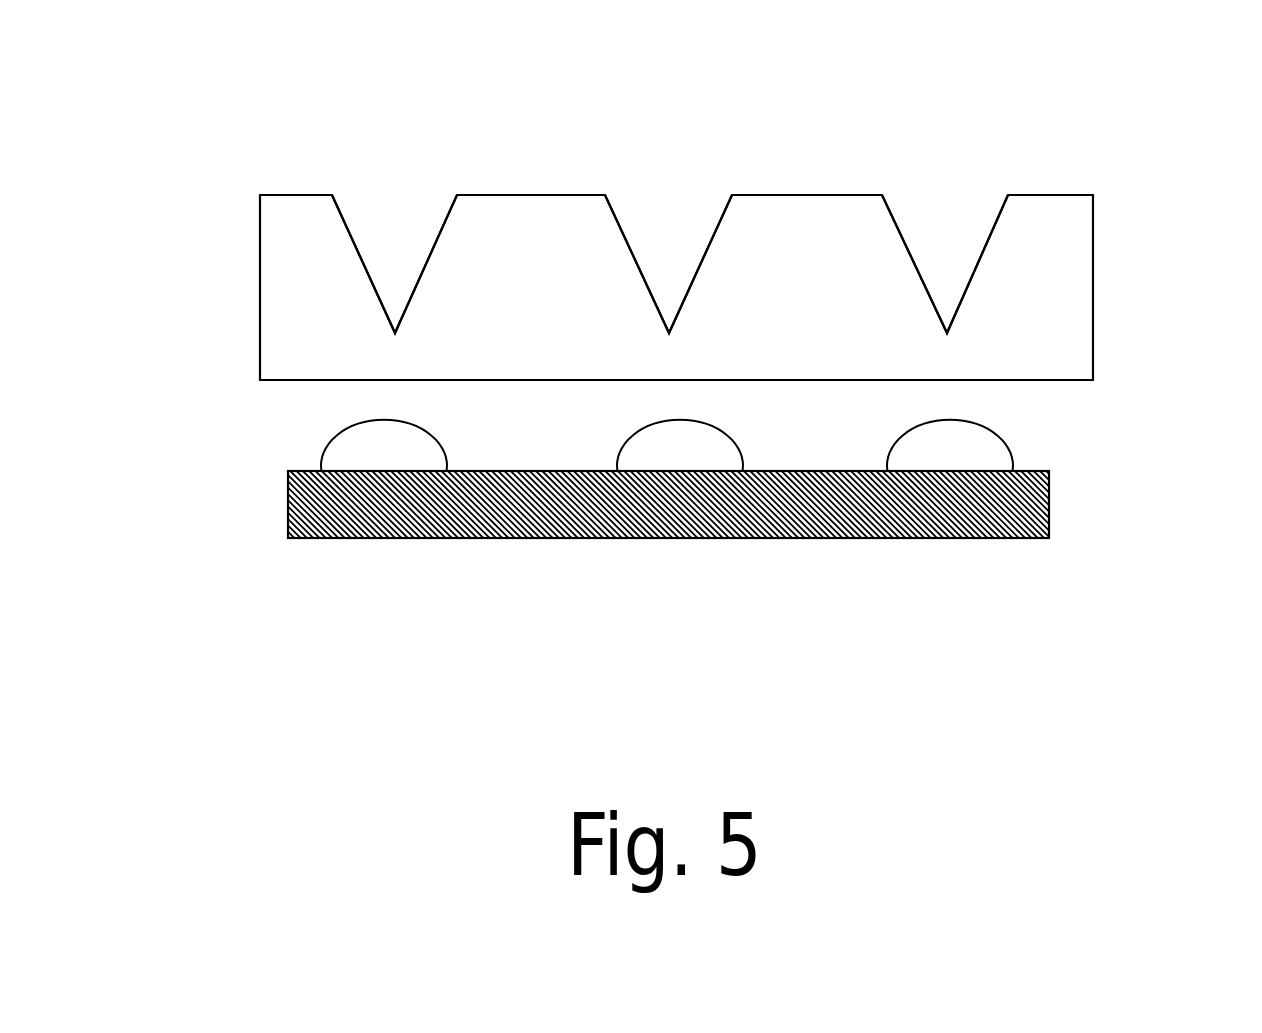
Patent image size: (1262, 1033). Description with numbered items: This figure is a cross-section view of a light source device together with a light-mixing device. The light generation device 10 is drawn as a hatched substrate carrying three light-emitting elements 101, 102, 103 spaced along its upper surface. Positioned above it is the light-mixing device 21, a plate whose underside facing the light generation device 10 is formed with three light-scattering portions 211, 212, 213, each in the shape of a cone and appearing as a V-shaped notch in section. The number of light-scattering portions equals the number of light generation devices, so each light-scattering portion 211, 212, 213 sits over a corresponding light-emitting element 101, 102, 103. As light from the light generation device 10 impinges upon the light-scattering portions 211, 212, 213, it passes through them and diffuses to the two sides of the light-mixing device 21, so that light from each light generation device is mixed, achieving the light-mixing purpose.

The light generation device 10 is at (1050, 478).
The light-emitting element 101 is at (378, 447).
The light-emitting element 102 is at (683, 458).
The light-emitting element 103 is at (957, 455).
The light-mixing device 21 is at (303, 317).
The light-scattering portion 211 is at (433, 247).
The light-scattering portion 212 is at (625, 228).
The light-scattering portion 213 is at (910, 238).